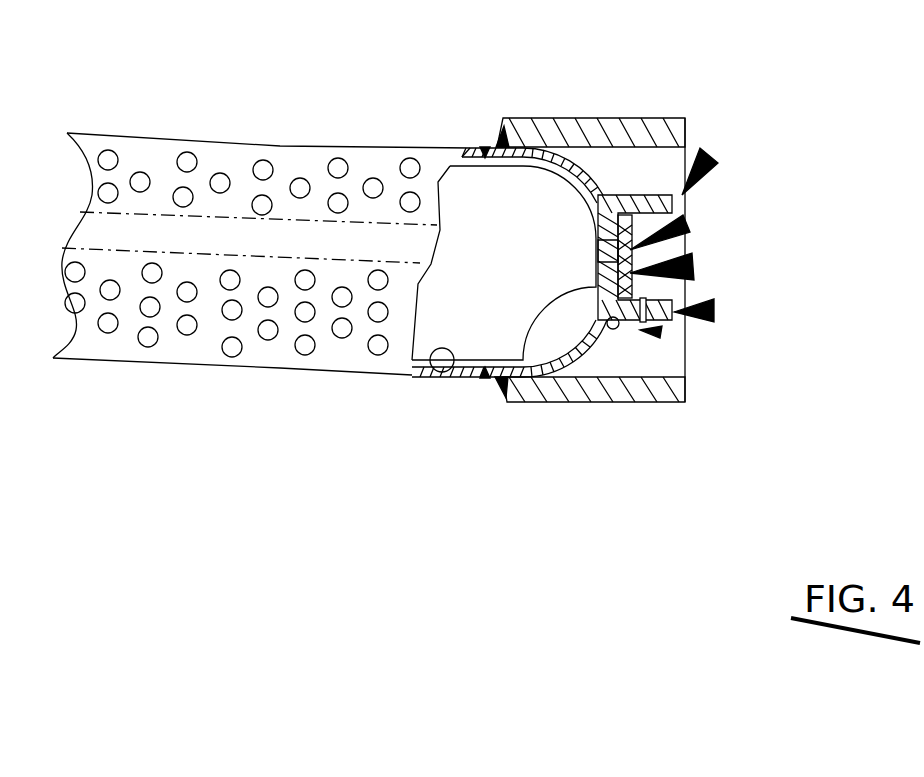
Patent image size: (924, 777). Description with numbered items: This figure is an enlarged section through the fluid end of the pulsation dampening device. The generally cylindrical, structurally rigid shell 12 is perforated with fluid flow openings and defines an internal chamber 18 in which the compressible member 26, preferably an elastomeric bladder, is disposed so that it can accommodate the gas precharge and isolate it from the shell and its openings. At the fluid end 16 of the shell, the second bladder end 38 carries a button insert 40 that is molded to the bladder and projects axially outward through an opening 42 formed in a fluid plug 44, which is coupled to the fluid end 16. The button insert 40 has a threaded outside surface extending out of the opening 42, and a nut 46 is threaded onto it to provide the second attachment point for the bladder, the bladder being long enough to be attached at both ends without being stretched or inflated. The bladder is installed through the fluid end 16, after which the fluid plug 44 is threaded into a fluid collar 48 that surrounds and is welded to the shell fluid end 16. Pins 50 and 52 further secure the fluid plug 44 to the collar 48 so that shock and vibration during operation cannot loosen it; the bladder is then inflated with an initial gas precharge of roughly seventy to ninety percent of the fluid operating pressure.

The housing body or shell 12 is at (293, 157).
The fluid end 16 is at (657, 337).
The chamber 18 is at (450, 377).
The compressible member 26 is at (480, 275).
The second bladder end 38 is at (622, 203).
The button insert 40 is at (687, 223).
The opening 42 is at (605, 252).
The fluid plug 44 is at (718, 160).
The nut 46 is at (693, 267).
The fluid collar 48 is at (658, 200).
The pin 50 is at (714, 311).
The pin 52 is at (660, 333).